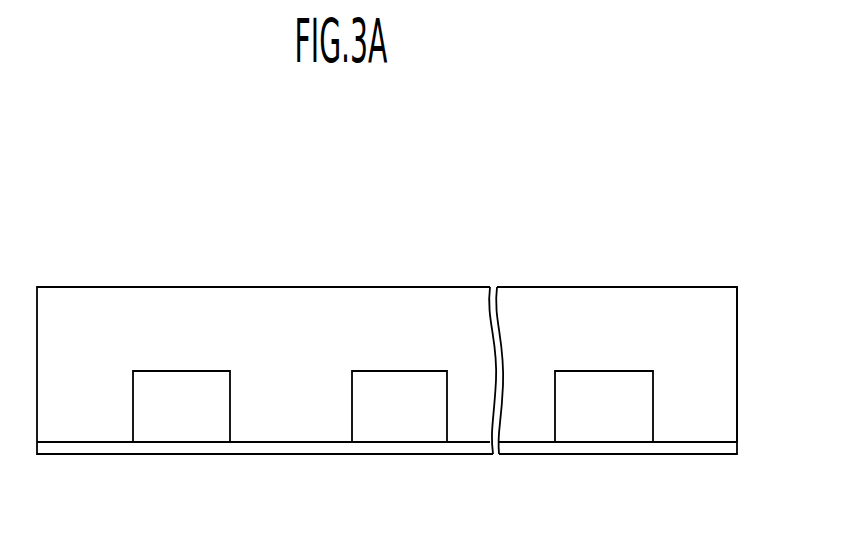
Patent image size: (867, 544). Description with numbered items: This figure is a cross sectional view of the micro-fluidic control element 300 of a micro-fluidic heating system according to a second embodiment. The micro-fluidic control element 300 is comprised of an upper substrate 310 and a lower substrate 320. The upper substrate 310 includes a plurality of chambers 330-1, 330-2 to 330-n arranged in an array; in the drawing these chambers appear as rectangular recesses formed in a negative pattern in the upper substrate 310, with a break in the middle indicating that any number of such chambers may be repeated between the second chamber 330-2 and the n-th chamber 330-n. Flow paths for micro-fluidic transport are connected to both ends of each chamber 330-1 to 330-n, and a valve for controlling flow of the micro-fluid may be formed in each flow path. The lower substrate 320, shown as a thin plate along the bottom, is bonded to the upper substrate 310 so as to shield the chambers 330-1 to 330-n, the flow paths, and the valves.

The micro-fluidic control element 300 is at (748, 332).
The upper substrate 310 is at (725, 378).
The lower substrate 320 is at (725, 443).
The chamber 330-1 is at (188, 428).
The chamber 330-2 is at (405, 428).
The chamber 330-n is at (608, 428).